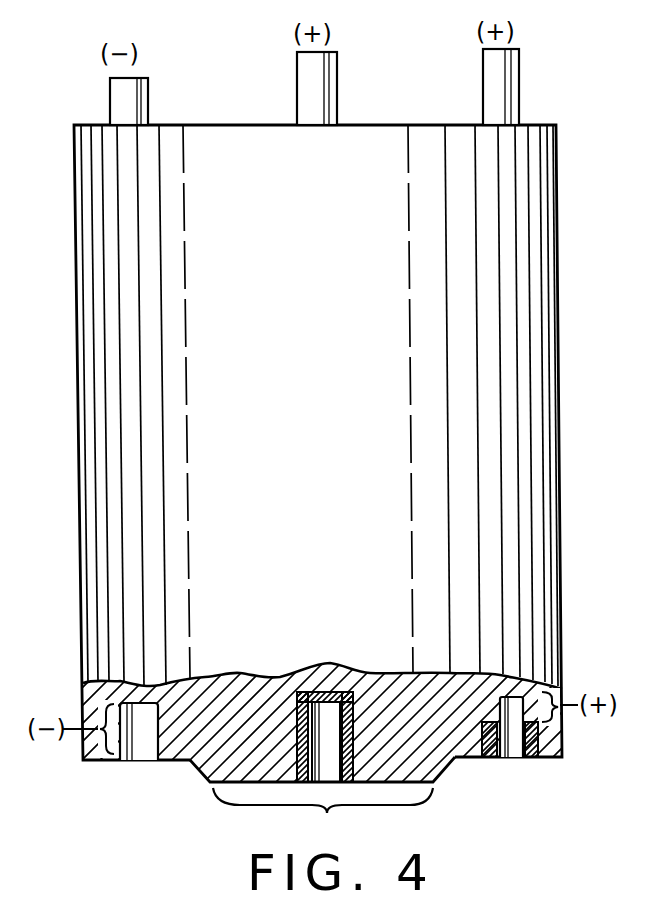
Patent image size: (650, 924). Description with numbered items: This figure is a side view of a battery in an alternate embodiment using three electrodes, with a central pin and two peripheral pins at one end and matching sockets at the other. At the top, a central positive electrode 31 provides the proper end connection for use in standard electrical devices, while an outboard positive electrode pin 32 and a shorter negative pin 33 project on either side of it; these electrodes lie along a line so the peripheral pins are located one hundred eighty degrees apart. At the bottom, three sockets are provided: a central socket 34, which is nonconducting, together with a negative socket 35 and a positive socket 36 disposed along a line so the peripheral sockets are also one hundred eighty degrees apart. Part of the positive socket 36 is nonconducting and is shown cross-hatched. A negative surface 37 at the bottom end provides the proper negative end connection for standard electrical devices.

The central positive electrode 31 is at (317, 88).
The outboard positive electrode pin 32 is at (498, 82).
The shorter negative pin 33 is at (135, 97).
The central socket 34 is at (333, 700).
The negative socket 35 is at (143, 710).
The positive socket 36 is at (512, 697).
The negative surface 37 is at (268, 781).